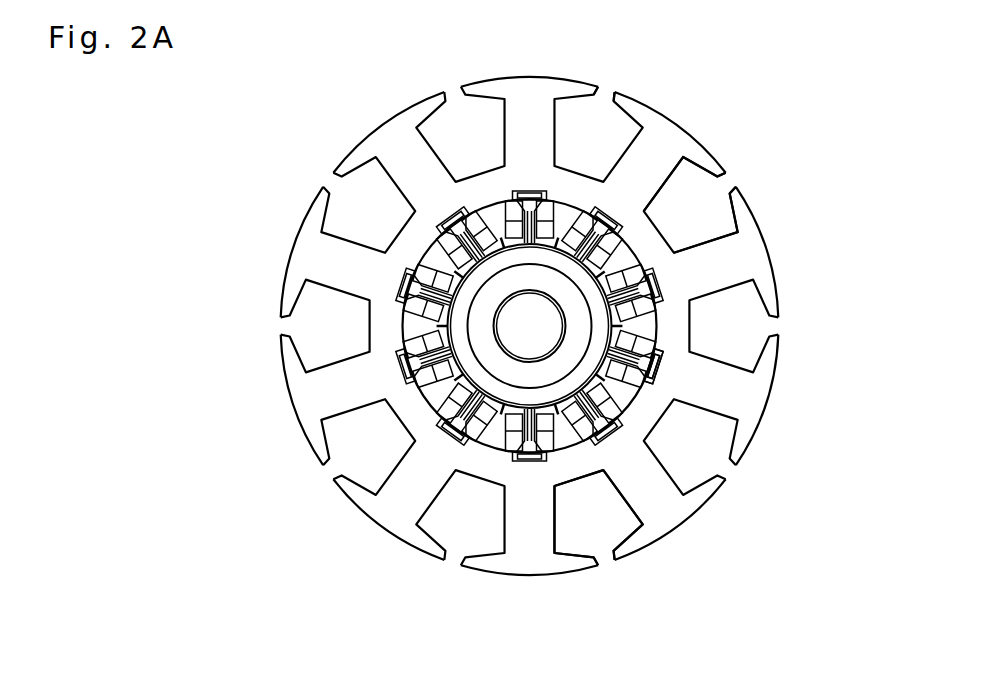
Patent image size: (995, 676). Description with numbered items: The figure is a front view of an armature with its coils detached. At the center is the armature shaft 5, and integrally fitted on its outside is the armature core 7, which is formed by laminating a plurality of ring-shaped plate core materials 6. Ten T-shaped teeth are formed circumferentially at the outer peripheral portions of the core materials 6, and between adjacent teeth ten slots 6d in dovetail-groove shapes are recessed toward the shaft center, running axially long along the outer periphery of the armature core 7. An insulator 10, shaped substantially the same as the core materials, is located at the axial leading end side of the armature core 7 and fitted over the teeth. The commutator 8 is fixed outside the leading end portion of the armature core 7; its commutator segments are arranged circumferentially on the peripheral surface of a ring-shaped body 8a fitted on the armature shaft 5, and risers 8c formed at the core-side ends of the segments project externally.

The armature shaft 5 is at (529, 323).
The core materials 6 is at (547, 80).
The slots 6d is at (600, 522).
The armature core 7 is at (656, 95).
The commutator 8 is at (495, 433).
The ring-shaped body 8a is at (580, 345).
The risers 8c is at (640, 385).
The insulator 10 is at (662, 163).